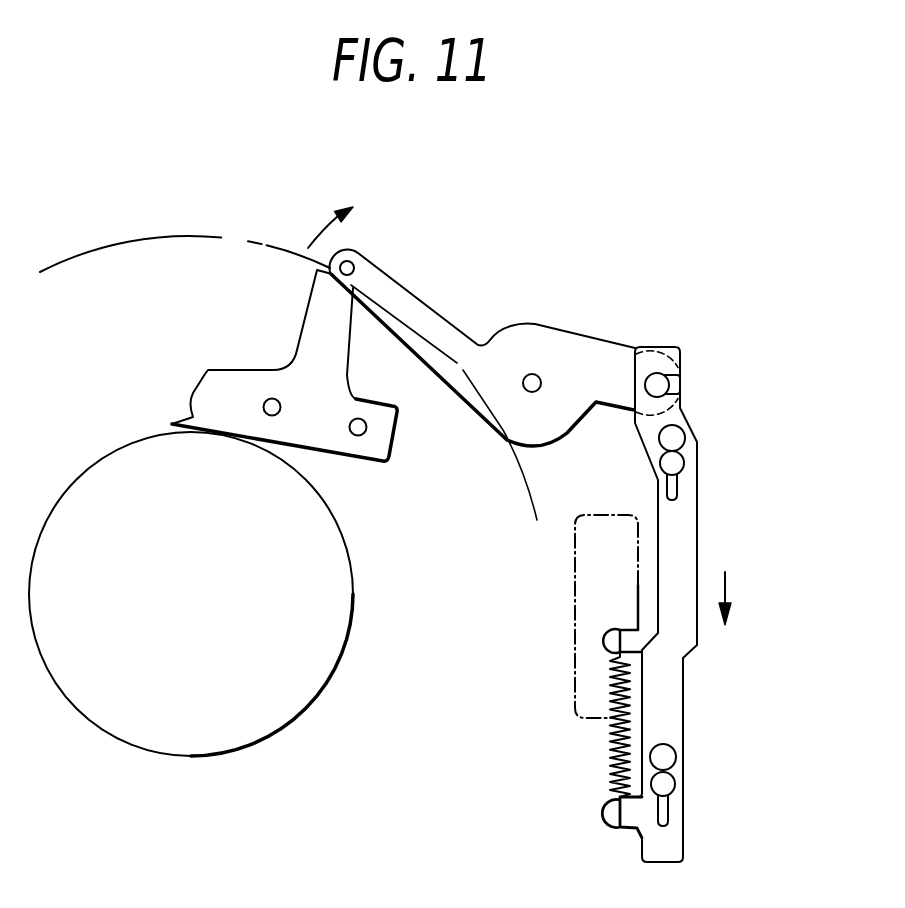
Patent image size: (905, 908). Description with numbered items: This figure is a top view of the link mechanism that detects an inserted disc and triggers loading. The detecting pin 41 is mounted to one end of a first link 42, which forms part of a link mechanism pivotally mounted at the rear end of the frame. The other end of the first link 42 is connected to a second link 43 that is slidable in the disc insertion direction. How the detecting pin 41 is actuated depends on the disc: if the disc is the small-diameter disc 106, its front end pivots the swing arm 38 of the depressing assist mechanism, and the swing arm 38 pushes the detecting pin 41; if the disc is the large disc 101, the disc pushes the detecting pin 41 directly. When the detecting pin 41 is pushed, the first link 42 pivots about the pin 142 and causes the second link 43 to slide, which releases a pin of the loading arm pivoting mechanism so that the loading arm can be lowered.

The large disc 101 is at (231, 226).
The detecting pin 41 is at (358, 251).
The first link 42 is at (427, 315).
The pin 142 is at (536, 393).
The swing arm 38 is at (361, 393).
The second link 43 is at (684, 560).
The small-diameter disc 106 is at (322, 690).